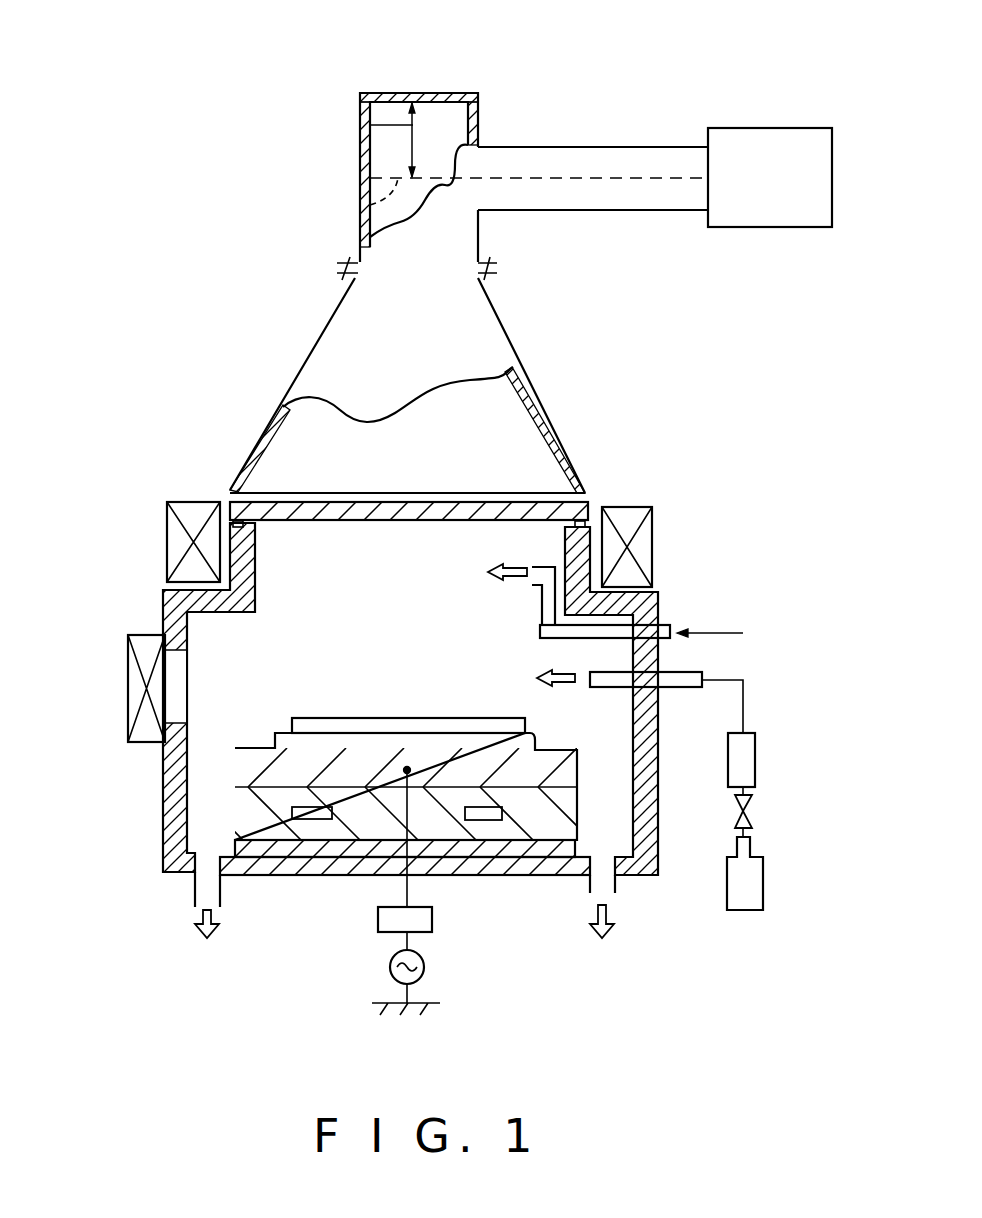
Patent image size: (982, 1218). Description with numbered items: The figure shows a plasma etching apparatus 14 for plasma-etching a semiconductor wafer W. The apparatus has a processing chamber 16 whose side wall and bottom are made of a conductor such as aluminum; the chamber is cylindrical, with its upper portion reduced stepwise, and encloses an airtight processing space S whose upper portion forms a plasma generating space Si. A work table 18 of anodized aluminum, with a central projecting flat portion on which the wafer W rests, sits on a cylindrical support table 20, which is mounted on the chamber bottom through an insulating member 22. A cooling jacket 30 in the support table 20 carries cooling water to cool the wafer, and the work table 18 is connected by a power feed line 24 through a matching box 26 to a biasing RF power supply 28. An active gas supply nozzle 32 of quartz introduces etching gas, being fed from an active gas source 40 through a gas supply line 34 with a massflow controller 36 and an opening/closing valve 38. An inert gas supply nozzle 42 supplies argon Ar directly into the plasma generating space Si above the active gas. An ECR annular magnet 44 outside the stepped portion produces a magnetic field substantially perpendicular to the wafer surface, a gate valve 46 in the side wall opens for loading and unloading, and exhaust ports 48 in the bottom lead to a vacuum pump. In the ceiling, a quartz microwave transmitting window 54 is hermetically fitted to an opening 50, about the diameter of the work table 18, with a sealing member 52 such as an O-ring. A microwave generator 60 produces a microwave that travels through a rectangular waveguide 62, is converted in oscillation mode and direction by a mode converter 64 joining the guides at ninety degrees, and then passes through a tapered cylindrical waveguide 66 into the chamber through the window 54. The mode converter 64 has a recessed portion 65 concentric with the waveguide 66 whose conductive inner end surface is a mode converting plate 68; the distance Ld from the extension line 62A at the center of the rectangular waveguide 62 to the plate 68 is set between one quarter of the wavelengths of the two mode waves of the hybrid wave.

The plasma etching apparatus 14 is at (400, 748).
The processing chamber 16 is at (658, 610).
The work table 18 is at (240, 778).
The support table 20 is at (235, 830).
The insulating member 22 is at (352, 848).
The power feed line 24 is at (407, 890).
The matching box 26 is at (432, 920).
The biasing RF power supply 28 is at (424, 962).
The cooling jacket 30 is at (300, 830).
The active gas supply nozzle 32 is at (702, 673).
The gas supply line 34 is at (745, 708).
The massflow controller 36 is at (755, 746).
The opening/closing valve 38 is at (752, 797).
The active gas source 40 is at (763, 872).
The inert gas supply nozzle 42 is at (545, 627).
The ECR annular magnet 44 is at (655, 508).
The gate valve 46 is at (128, 700).
The exhaust ports 48 is at (200, 897).
The opening 50 is at (337, 525).
The sealing member 52 is at (590, 520).
The microwave transmitting window 54 is at (553, 489).
The microwave generator 60 is at (782, 227).
The rectangular waveguide 62 is at (583, 147).
The extension line 62A is at (370, 205).
The mode converter 64 is at (362, 147).
The recessed portion 65 is at (463, 108).
The tapered cylindrical waveguide 66 is at (493, 306).
The mode converting plate 68 is at (403, 93).
The distance Ld is at (362, 125).
The semiconductor wafer W is at (302, 718).
The processing space S is at (395, 674).
The plasma generating space Si is at (392, 601).
The argon Ar is at (727, 634).